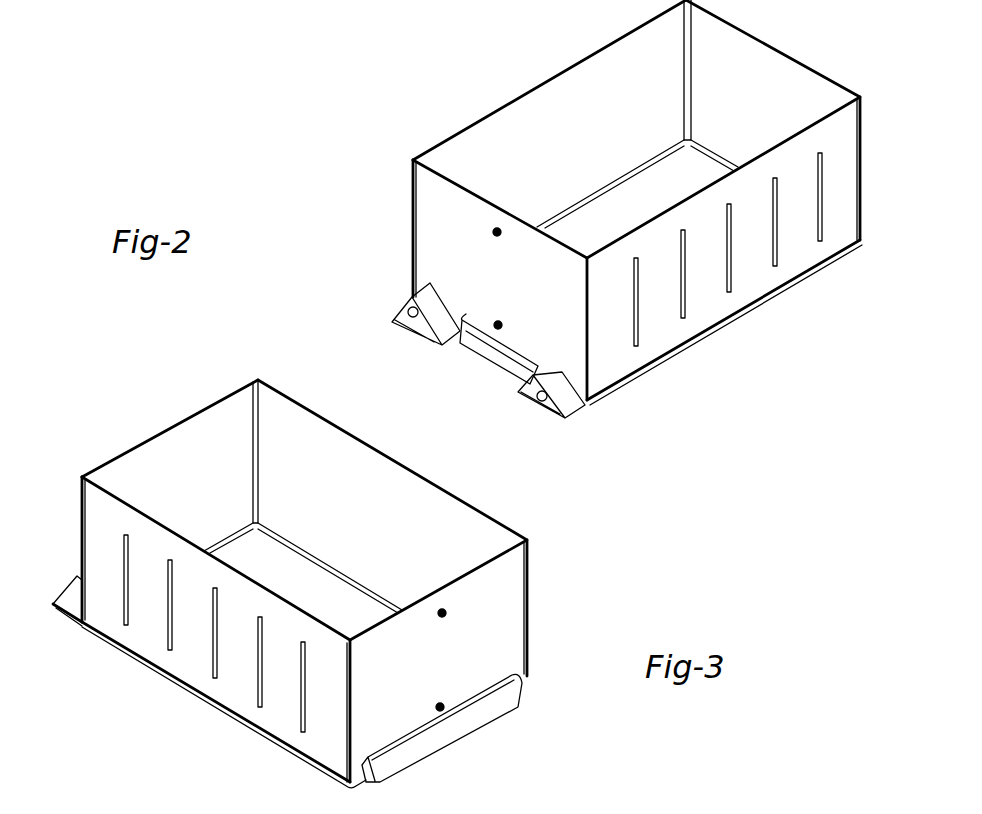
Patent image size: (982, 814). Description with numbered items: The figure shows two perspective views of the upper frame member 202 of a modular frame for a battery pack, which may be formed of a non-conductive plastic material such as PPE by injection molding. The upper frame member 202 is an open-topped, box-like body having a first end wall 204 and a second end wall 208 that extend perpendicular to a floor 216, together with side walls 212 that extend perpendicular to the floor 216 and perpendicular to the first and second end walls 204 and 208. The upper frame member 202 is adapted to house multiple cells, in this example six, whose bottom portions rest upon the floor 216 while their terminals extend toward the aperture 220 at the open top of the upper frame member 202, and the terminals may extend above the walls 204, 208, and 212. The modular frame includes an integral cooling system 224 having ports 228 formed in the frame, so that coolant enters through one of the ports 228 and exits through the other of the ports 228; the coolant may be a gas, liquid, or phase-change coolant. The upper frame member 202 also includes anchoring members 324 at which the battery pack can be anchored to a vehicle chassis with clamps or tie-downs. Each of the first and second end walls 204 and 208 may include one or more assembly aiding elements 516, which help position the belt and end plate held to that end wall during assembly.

In FIG. 2, the upper frame member 202 is at (387, 66).
In FIG. 3, the upper frame member 202 is at (591, 514).
In FIG. 2, the first end wall 204 is at (435, 192).
In FIG. 3, the first end wall 204 is at (158, 434).
In FIG. 2, the second end wall 208 is at (791, 54).
In FIG. 3, the second end wall 208 is at (499, 613).
In FIG. 2, the side walls 212 is at (581, 61).
In FIG. 3, the side walls 212 is at (438, 485).
In FIG. 2, the floor 216 is at (643, 193).
In FIG. 3, the floor 216 is at (291, 572).
In FIG. 2, the aperture 220 is at (511, 83).
In FIG. 3, the aperture 220 is at (262, 375).
In FIG. 2, the integral cooling system 224 is at (392, 283).
In FIG. 2, the ports 228 is at (406, 322).
In FIG. 2, the anchoring members 324 is at (495, 350).
In FIG. 3, the anchoring members 324 is at (447, 734).
In FIG. 2, the assembly aiding elements 516 is at (494, 325).
In FIG. 3, the assembly aiding elements 516 is at (446, 708).